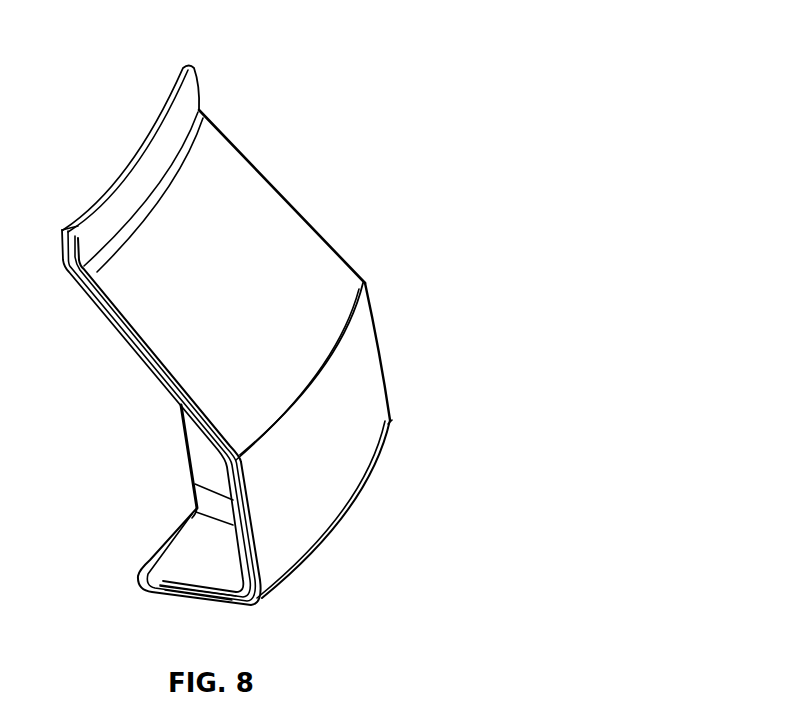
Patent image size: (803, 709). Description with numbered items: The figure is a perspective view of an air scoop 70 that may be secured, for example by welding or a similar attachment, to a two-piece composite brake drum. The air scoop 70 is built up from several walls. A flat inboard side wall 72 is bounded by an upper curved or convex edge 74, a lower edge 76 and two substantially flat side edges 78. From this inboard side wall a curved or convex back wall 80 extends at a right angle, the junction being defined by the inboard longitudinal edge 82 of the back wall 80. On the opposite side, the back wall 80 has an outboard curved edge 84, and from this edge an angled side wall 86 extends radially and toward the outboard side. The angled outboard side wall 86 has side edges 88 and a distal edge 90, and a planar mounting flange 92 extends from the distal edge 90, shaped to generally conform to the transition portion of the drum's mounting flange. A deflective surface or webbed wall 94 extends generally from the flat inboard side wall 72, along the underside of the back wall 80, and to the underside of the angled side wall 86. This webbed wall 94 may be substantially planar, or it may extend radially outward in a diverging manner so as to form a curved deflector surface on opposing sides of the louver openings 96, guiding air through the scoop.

The air scoop 70 is at (376, 68).
The flat inboard side wall 72 is at (196, 615).
The upper curved or convex edge 74 is at (295, 570).
The lower edge 76 is at (153, 567).
The side edges 78 is at (396, 372).
The curved or convex back wall 80 is at (323, 466).
The inboard longitudinal edge 82 is at (320, 523).
The outboard curved edge 84 is at (367, 311).
The angled side wall 86 is at (287, 224).
The side edges 88 is at (265, 176).
The distal edge 90 is at (208, 134).
The planar mounting flange 92 is at (192, 96).
The deflective surface or webbed wall 94 is at (202, 454).
The louver openings 96 is at (399, 258).